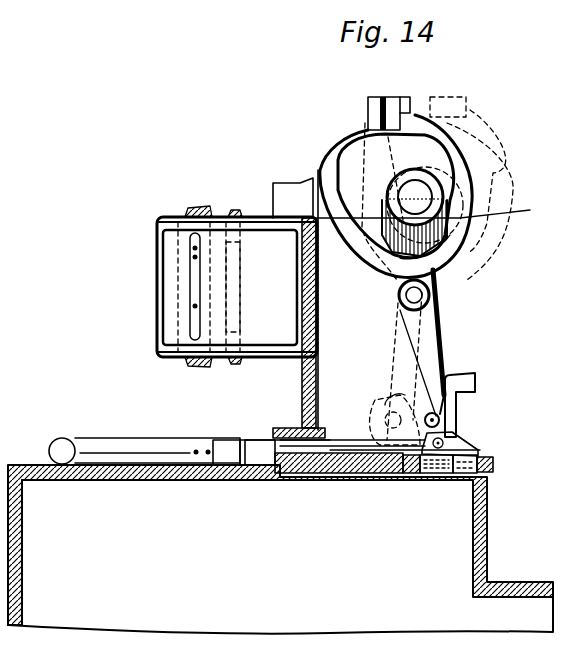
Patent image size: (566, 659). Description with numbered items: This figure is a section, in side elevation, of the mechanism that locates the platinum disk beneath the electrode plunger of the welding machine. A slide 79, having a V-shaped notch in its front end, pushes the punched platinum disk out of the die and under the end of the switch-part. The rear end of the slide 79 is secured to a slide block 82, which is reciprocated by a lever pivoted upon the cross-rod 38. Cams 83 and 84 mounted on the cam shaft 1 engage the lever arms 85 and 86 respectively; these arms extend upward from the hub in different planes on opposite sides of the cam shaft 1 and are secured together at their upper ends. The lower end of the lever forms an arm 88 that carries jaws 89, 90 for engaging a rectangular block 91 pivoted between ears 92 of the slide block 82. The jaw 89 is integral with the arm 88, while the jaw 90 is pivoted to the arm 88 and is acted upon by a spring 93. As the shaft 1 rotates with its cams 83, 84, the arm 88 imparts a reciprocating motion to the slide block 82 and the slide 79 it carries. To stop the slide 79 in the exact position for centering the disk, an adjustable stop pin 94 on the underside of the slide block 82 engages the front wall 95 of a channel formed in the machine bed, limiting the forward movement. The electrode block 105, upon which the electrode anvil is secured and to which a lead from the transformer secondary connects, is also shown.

The cam shaft 1 is at (415, 197).
The cross-rod 38 is at (432, 300).
The slide 79 is at (262, 437).
The slide block 82 is at (346, 455).
The cam 83 is at (462, 256).
The cam 84 is at (436, 238).
The lever arm 85 is at (434, 212).
The lever arm 86 is at (336, 135).
The arm 88 is at (425, 345).
The jaw 89 is at (400, 410).
The jaw 90 is at (450, 433).
The rectangular block 91 is at (447, 425).
The ears 92 is at (412, 474).
The spring 93 is at (446, 378).
The adjustable stop pin 94 is at (482, 456).
The front wall 95 is at (396, 474).
The electrode block 105 is at (128, 450).